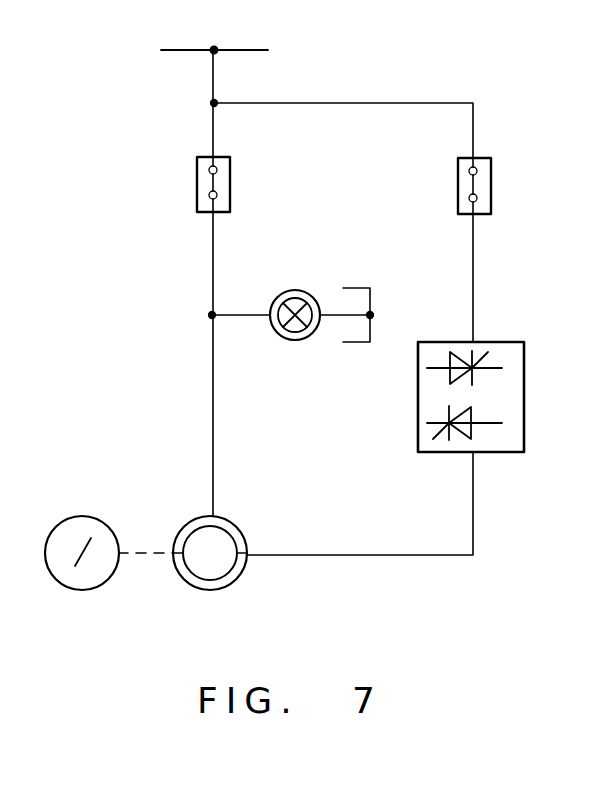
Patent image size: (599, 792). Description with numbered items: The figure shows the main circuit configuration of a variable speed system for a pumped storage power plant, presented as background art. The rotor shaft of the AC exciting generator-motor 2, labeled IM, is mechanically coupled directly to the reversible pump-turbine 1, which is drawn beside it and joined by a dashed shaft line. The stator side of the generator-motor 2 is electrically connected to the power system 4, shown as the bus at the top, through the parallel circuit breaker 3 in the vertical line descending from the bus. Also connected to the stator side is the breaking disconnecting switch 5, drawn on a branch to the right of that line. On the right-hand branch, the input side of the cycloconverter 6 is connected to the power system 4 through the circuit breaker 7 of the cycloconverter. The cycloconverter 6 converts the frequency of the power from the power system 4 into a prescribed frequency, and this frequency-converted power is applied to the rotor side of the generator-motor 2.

The reversible pump-turbine 1 is at (92, 516).
The AC exciting generator-motor 2 is at (231, 518).
The parallel circuit breaker 3 is at (232, 164).
The power system 4 is at (245, 48).
The breaking disconnecting switch 5 is at (296, 290).
The cycloconverter 6 is at (505, 341).
The circuit breaker of the cycloconverter 7 is at (493, 166).